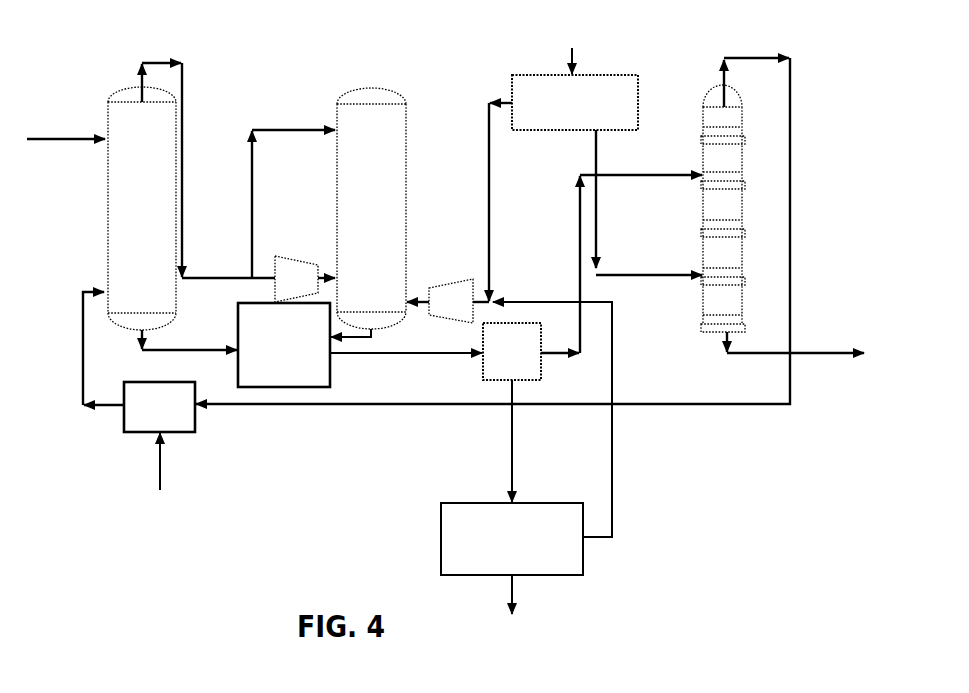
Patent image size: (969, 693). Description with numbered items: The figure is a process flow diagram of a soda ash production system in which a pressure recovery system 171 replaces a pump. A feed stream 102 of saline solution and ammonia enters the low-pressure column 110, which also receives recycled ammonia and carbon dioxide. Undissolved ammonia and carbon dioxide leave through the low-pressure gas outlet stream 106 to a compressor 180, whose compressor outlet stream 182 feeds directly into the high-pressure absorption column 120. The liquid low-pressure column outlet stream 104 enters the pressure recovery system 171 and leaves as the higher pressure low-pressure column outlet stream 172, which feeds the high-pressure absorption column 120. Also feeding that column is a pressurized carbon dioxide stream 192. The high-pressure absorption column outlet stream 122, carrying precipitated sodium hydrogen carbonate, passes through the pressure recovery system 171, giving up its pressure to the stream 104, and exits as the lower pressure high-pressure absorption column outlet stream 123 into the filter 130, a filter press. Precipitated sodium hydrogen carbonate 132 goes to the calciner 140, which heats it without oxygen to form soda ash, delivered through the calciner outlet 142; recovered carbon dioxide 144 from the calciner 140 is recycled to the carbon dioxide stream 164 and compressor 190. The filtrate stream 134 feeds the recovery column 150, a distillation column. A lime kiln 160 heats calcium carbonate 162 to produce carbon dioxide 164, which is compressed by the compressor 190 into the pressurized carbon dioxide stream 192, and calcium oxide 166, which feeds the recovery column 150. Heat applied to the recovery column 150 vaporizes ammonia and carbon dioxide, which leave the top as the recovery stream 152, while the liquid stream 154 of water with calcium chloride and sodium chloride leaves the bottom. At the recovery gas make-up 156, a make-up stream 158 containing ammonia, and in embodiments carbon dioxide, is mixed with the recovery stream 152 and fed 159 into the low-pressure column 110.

The feed stream 102 is at (66, 129).
The low-pressure column outlet stream 104 is at (189, 341).
The low-pressure gas outlet stream 106 is at (183, 83).
The low-pressure column 110 is at (142, 208).
The high-pressure absorption column 120 is at (371, 208).
The high-pressure absorption column outlet stream 122 is at (349, 340).
The lower pressure high-pressure absorption column outlet stream 123 is at (406, 341).
The filter 130 is at (512, 351).
The precipitated sodium hydrogen carbonate 132 is at (513, 450).
The filtrate stream 134 is at (621, 252).
The calciner 140 is at (512, 539).
The product stream from unit 140 142 is at (513, 605).
The recovered carbon dioxide 144 is at (576, 419).
The recovery column 150 is at (733, 205).
The recovery stream 152 is at (493, 231).
The liquid stream 154 is at (795, 340).
The recovery gas make-up 156 is at (159, 407).
The make-up stream 158 is at (138, 461).
The mixed recovery and make-up feed 159 is at (81, 348).
The lime kiln 160 is at (575, 102).
The calcium carbonate 162 is at (571, 50).
The carbon dioxide 164 is at (490, 192).
The calcium oxide 166 is at (649, 202).
The pressure recovery system 171 is at (284, 345).
The higher pressure low-pressure column outlet stream 172 is at (293, 192).
The compressor 180 is at (278, 256).
The compressor outlet stream 182 is at (330, 270).
The compressor 190 is at (453, 290).
The pressurized carbon dioxide stream 192 is at (415, 300).